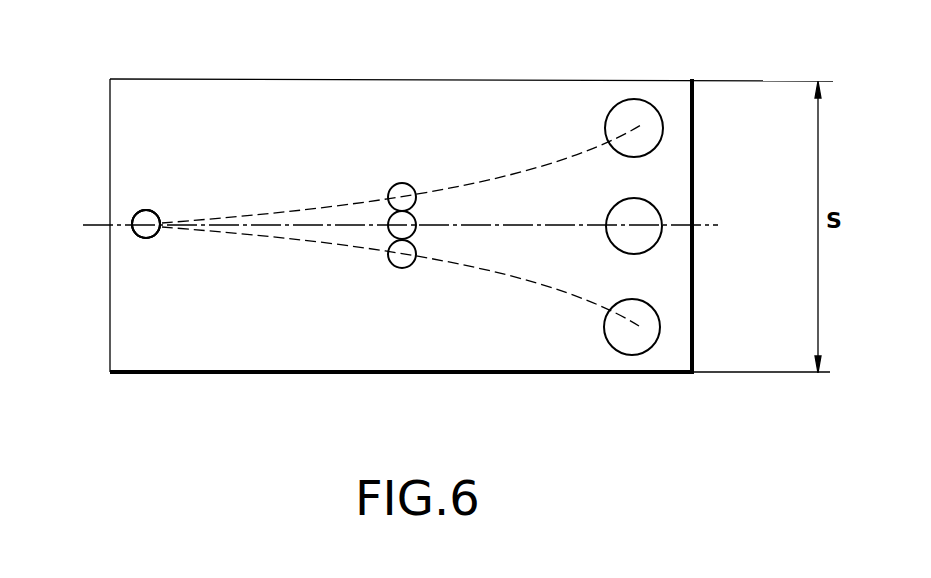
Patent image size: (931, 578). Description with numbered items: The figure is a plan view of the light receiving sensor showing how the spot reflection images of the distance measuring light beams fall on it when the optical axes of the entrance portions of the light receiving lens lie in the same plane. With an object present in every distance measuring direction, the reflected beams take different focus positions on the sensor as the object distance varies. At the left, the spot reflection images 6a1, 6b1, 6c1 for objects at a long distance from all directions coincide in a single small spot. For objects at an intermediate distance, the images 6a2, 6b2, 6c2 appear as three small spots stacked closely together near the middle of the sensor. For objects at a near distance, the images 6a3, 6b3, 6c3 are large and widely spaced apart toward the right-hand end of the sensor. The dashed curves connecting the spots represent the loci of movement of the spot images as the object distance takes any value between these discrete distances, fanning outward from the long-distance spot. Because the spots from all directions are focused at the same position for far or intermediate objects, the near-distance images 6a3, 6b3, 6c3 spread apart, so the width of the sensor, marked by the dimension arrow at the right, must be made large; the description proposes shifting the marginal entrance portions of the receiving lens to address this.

The spot reflection image for object at long distance 6a1 is at (102, 174).
The spot reflection image for object at long distance 6b1 is at (102, 189).
The spot reflection image for object at long distance 6c1 is at (136, 215).
The spot reflection image for object at intermediate distance 6a2 is at (389, 218).
The spot reflection image for object at intermediate distance 6b2 is at (398, 185).
The spot reflection image for object at intermediate distance 6c2 is at (395, 270).
The spot reflection image for object at near distance 6a3 is at (608, 217).
The spot reflection image for object at near distance 6b3 is at (629, 100).
The spot reflection image for object at near distance 6c3 is at (617, 350).